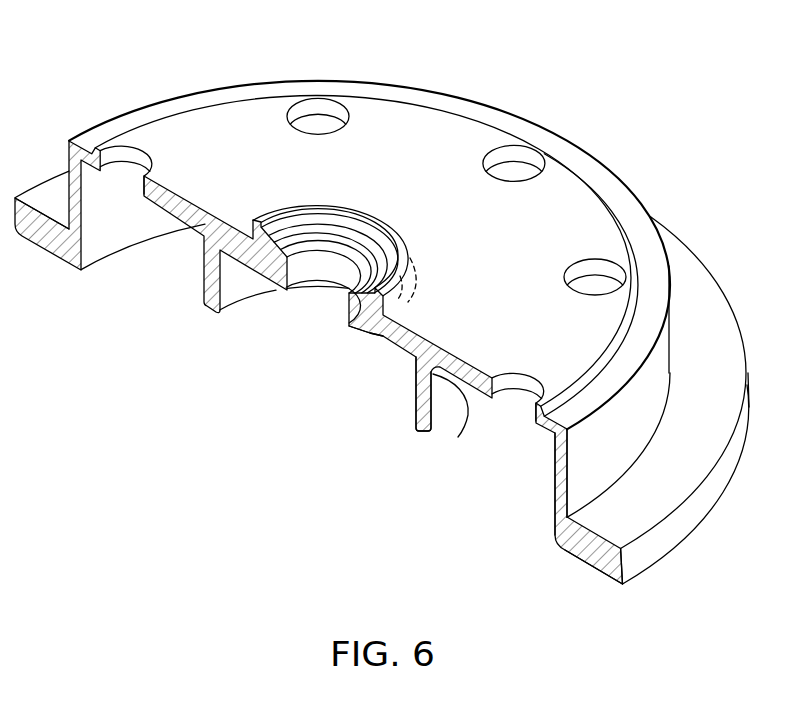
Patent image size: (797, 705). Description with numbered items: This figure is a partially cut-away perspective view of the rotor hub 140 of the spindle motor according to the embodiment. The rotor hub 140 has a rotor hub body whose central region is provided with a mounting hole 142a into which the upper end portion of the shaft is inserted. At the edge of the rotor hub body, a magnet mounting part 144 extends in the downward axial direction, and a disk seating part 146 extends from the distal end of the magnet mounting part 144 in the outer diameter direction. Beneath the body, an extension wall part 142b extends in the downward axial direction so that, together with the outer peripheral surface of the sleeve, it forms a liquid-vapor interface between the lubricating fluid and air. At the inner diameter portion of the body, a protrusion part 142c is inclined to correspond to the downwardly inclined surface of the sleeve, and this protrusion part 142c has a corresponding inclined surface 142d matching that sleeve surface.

The rotor hub 140 is at (382, 311).
The mounting hole 142a is at (374, 256).
The extension wall part 142b is at (423, 400).
The protrusion part 142c is at (349, 328).
The corresponding inclined surface 142d is at (368, 334).
The magnet mounting part 144 is at (556, 485).
The disk seating part 146 is at (584, 557).